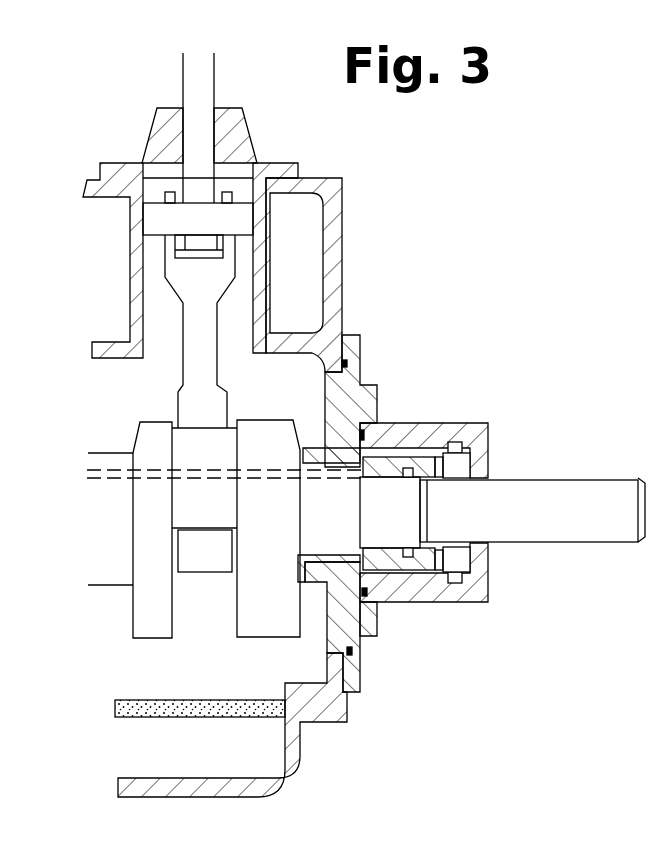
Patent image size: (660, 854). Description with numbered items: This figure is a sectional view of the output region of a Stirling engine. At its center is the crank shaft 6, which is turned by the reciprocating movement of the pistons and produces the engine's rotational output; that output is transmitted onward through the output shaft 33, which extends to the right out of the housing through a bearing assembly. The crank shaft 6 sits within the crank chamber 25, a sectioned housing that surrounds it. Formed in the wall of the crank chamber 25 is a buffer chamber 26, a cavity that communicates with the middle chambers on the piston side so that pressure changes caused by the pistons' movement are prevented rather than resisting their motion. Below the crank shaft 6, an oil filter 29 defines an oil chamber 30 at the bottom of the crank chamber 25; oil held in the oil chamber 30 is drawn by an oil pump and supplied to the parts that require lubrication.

The crank shaft 6 is at (135, 517).
The crank chamber 25 is at (290, 388).
The buffer chamber 26 is at (300, 278).
The oil filter 29 is at (140, 700).
The oil chamber 30 is at (260, 763).
The output shaft 33 is at (557, 478).